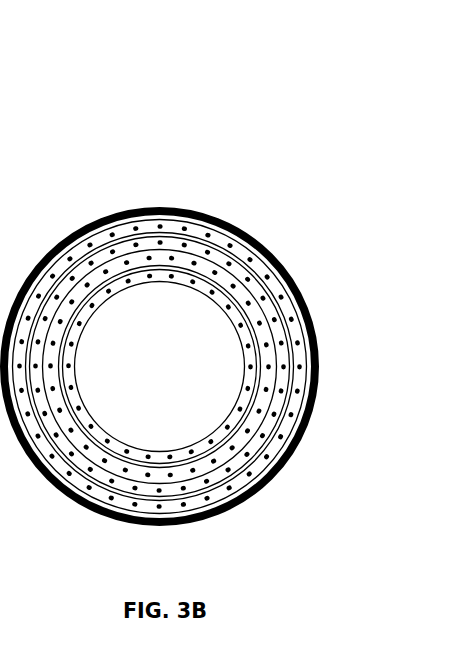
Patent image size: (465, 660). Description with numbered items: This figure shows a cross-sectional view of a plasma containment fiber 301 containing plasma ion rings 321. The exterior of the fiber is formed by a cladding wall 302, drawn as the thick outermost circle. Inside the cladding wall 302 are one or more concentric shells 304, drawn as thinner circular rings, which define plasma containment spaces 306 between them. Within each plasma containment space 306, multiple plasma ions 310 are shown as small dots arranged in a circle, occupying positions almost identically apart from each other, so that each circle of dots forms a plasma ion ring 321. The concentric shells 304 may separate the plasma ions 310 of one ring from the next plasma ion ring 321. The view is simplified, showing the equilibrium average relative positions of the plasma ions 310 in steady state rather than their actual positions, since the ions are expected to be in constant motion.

The plasma containment fiber 301 is at (203, 280).
The cladding wall 302 is at (94, 218).
The concentric shells 304 is at (198, 236).
The plasma containment space 306 is at (296, 367).
The plasma ions 310 is at (265, 303).
The plasma ion rings 321 is at (270, 402).